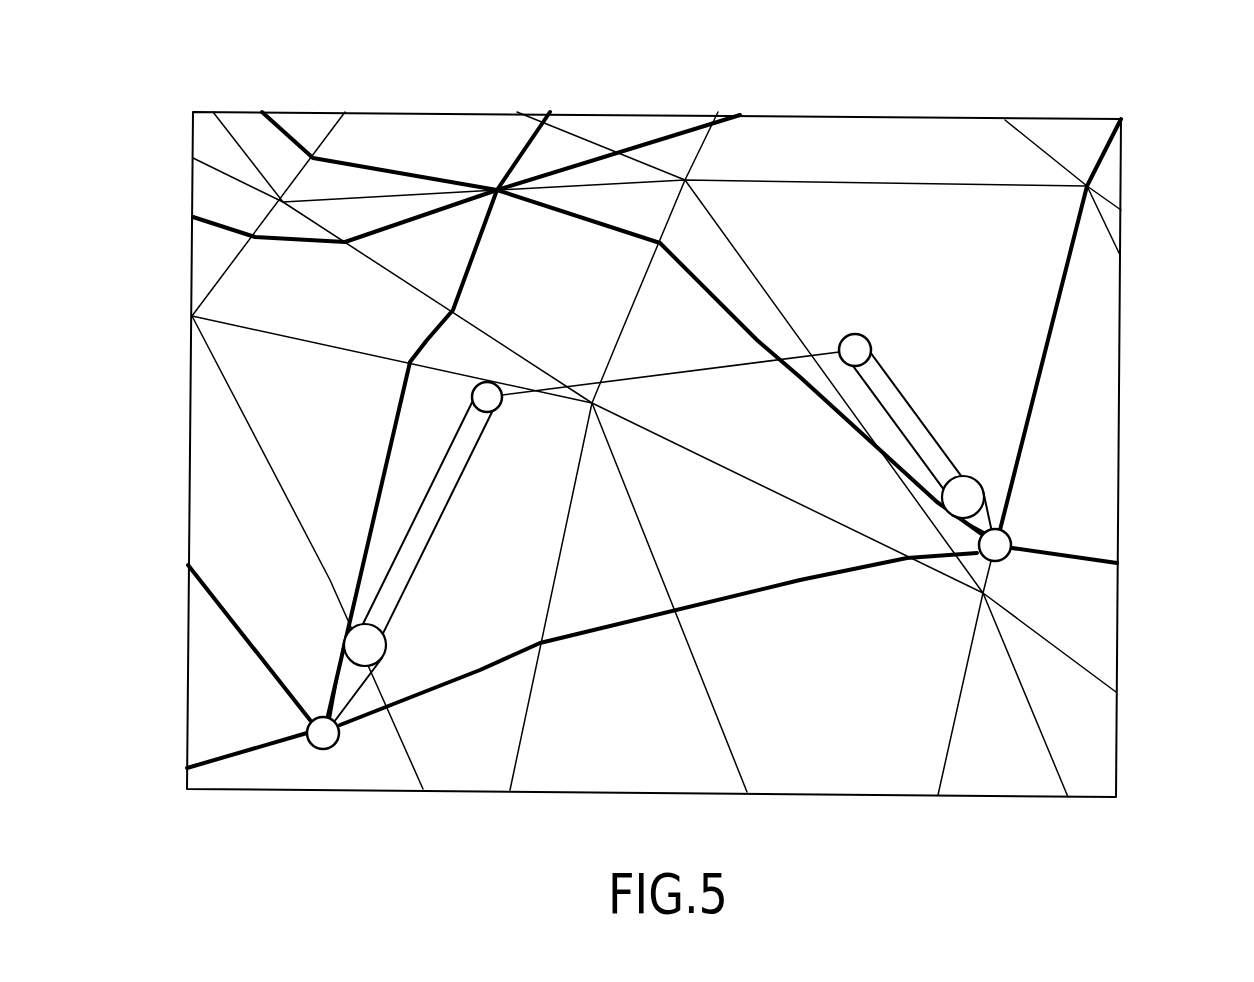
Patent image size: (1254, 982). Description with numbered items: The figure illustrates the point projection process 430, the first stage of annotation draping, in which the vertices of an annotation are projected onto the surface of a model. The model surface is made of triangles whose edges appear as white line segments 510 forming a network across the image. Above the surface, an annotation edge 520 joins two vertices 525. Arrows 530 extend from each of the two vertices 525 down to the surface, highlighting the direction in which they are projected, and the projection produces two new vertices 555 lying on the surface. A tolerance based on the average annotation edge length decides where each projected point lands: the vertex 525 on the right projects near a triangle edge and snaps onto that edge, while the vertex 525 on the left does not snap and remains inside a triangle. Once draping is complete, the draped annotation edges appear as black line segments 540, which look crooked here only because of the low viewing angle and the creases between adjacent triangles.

The point projection process 430 is at (1125, 71).
The line segments 510 is at (245, 328).
The edge 520 is at (685, 370).
The vertices 525 is at (477, 386).
The arrows 530 is at (412, 523).
The line segments 540 is at (797, 588).
The new vertices 555 is at (308, 724).